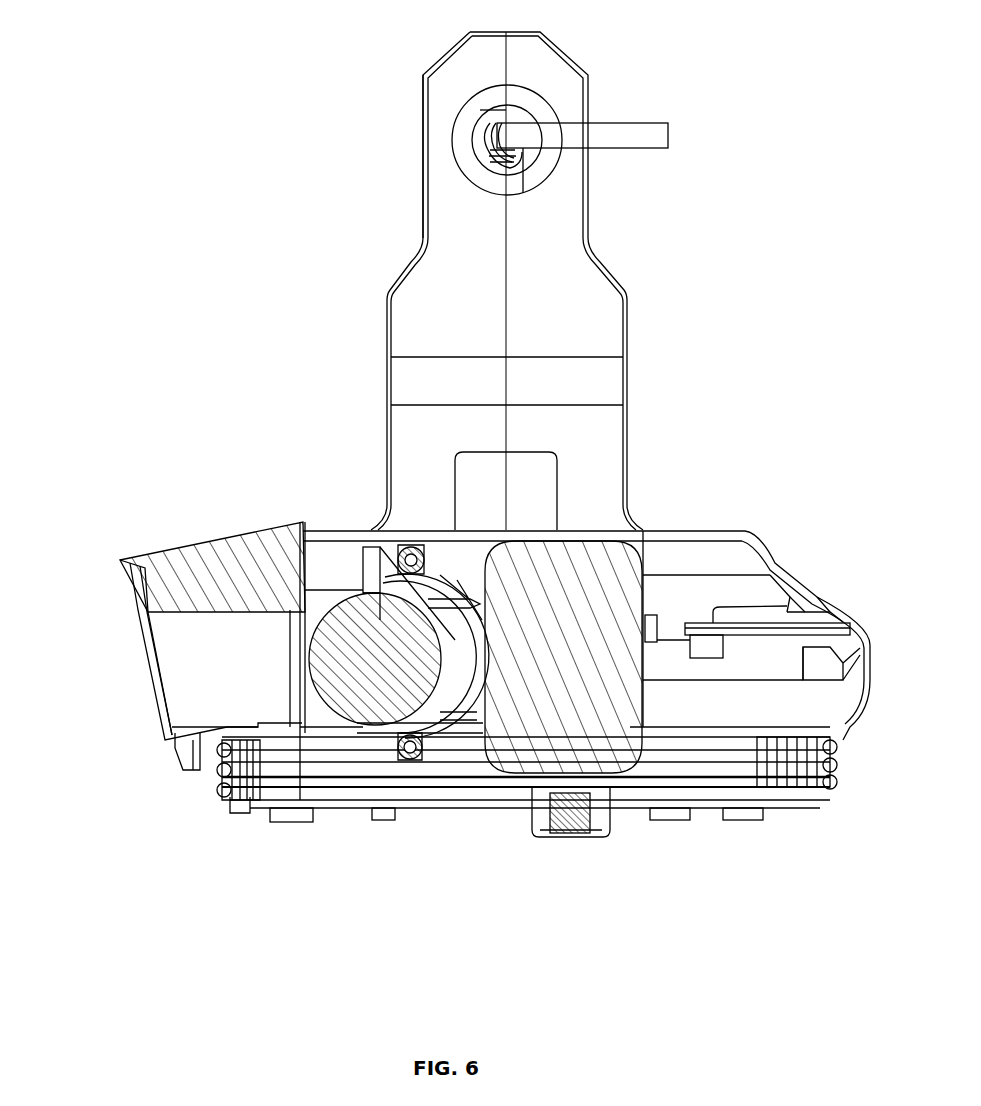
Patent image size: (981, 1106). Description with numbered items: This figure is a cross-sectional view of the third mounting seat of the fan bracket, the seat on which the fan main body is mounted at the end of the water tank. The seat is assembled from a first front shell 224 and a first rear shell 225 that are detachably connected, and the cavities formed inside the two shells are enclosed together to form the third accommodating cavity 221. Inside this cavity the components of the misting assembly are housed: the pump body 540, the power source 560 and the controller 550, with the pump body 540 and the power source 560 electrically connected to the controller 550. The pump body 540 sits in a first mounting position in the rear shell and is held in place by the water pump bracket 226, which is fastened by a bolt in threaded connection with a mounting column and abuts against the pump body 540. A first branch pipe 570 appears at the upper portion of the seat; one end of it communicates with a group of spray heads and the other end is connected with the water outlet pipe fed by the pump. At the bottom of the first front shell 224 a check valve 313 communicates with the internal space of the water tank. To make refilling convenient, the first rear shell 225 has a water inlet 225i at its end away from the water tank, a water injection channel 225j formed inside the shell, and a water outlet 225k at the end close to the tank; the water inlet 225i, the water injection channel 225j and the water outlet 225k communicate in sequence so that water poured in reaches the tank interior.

The first front shell 224 is at (588, 75).
The first rear shell 225 is at (423, 100).
The first branch pipe 570 is at (600, 140).
The water inlet 225i is at (247, 522).
The water injection channel 225j is at (233, 668).
The water outlet 225k is at (220, 787).
The pump body 540 is at (308, 640).
The power source 560 is at (547, 727).
The check valve 313 is at (573, 800).
The water pump bracket 226 is at (450, 700).
The controller 550 is at (787, 612).
The third accommodating cavity 221 is at (733, 708).